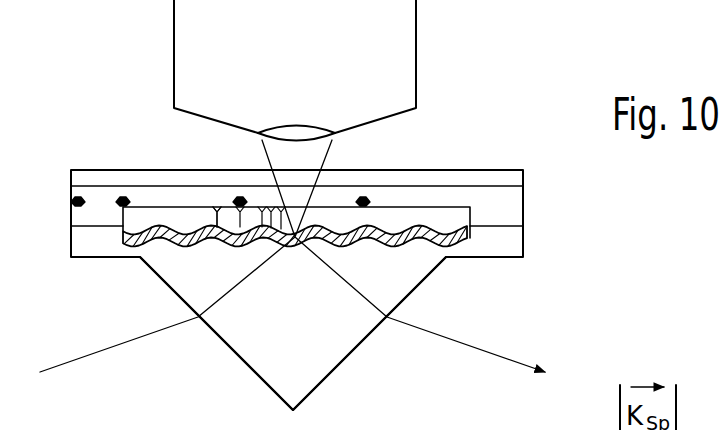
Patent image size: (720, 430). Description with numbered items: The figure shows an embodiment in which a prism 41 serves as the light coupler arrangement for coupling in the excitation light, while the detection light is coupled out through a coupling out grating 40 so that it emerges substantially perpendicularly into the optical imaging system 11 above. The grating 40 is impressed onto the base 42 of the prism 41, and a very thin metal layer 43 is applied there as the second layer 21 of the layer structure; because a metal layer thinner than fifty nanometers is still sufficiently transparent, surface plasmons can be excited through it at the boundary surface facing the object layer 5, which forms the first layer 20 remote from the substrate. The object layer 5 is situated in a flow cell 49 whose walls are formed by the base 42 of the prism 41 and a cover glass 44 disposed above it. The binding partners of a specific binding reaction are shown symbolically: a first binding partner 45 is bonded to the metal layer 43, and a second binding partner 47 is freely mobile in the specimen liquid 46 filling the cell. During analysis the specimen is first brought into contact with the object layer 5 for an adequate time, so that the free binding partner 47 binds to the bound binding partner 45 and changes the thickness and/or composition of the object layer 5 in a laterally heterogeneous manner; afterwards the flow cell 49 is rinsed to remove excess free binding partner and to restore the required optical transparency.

The optical imaging system 11 is at (311, 40).
The cover glass 44 is at (100, 177).
The prism 41 is at (313, 343).
The object layer 5 is at (378, 220).
The coupling out grating 40 is at (383, 242).
The metal layer 43 is at (190, 242).
The flow cell 49 is at (216, 199).
The first binding partner 45 is at (215, 205).
The second binding partner 47 is at (76, 207).
The specimen liquid 46 is at (410, 197).
The base of prism 42 is at (432, 209).
The first layer 20 is at (478, 212).
The second layer 21 is at (478, 237).